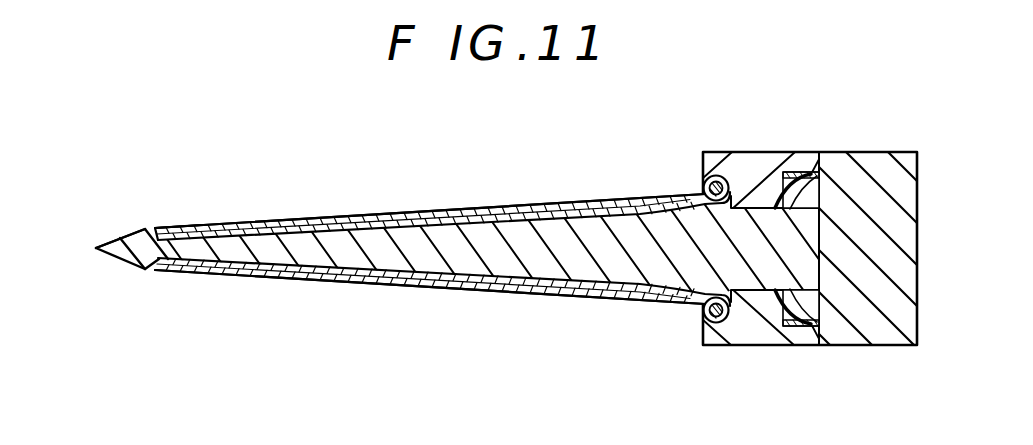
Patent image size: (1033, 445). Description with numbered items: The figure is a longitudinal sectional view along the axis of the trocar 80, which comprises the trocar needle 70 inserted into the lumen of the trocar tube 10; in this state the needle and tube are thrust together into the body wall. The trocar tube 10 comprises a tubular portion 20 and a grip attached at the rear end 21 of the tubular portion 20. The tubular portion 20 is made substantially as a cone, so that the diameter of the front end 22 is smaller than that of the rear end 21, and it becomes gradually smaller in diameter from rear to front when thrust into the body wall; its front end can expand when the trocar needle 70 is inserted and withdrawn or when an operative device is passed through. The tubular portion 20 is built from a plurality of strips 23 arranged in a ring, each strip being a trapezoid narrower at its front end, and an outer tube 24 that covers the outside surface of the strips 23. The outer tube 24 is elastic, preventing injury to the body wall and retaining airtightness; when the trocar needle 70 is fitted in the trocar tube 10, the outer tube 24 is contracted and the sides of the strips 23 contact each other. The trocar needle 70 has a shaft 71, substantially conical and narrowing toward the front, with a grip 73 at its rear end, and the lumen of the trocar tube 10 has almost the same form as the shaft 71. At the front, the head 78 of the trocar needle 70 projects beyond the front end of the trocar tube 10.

The trocar tube 10 is at (642, 303).
The tubular portion 20 is at (502, 293).
The rear end 21 is at (722, 158).
The front end 22 is at (152, 228).
The strips 23 is at (454, 209).
The outer tube 24 is at (340, 215).
The trocar needle 70 is at (121, 268).
The shaft 71 is at (317, 255).
The grip 73 is at (868, 320).
The head 78 is at (133, 240).
The trocar 80 is at (850, 142).